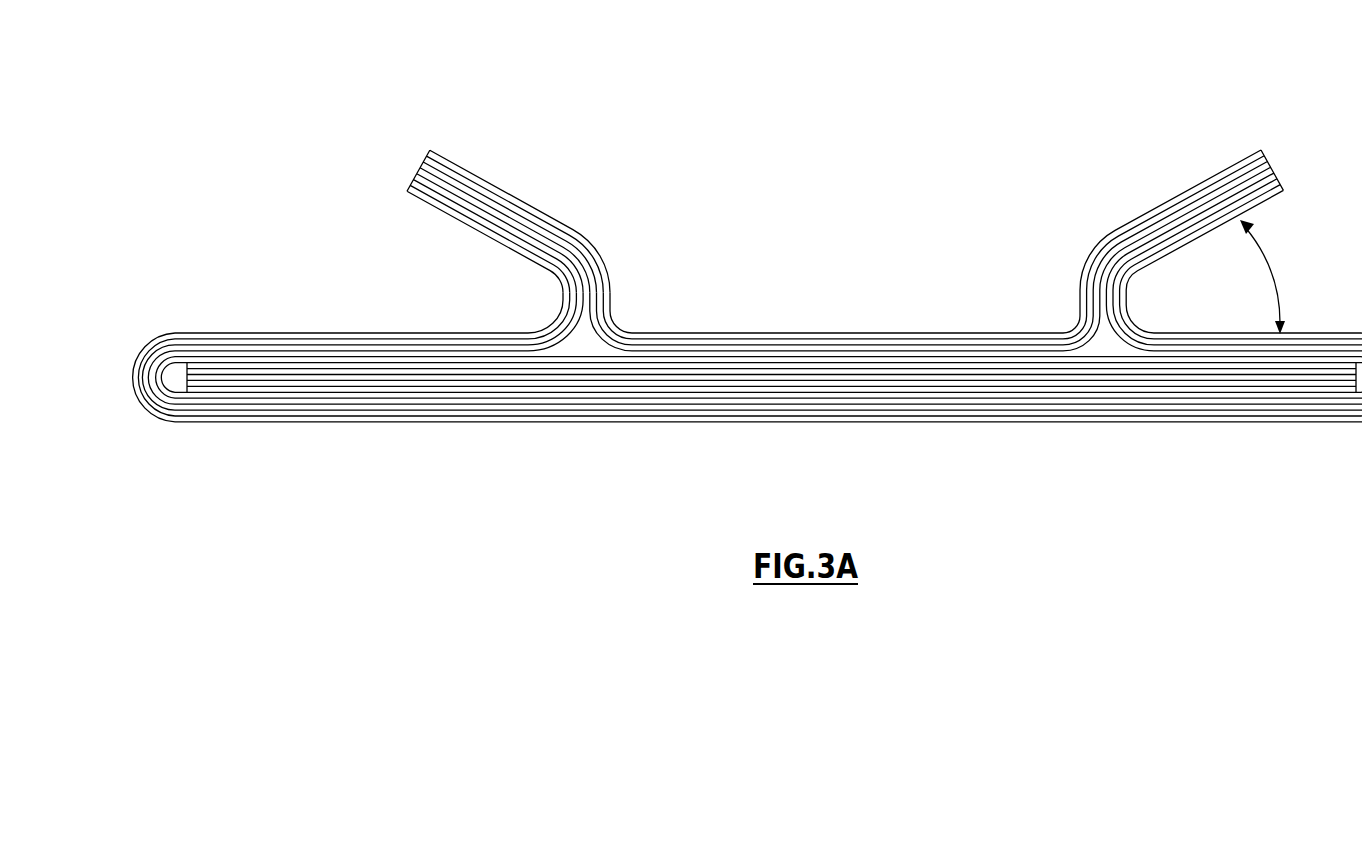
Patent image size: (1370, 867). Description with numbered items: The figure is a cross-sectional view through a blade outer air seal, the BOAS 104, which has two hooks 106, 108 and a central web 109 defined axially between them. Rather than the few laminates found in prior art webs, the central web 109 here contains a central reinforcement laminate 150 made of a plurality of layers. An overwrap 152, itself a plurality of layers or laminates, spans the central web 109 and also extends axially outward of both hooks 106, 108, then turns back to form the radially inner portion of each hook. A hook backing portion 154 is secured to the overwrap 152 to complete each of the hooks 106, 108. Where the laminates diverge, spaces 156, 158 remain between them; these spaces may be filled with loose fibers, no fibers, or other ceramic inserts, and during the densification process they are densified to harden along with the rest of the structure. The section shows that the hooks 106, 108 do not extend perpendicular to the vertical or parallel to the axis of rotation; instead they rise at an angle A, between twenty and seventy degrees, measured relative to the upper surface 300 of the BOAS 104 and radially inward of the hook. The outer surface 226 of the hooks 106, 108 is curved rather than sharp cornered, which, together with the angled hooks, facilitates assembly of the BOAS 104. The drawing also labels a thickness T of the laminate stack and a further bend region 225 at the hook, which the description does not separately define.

The BOAS 104 is at (1064, 94).
The hook 106 is at (495, 215).
The hook 108 is at (1180, 187).
The central web 109 is at (727, 407).
The central reinforcement laminate 150 is at (710, 368).
The overwrap 152 is at (596, 405).
The hook backing portion 154 is at (598, 291).
The space 156 is at (578, 347).
The space 158 is at (163, 370).
The first bend radius 225 is at (588, 246).
The outer surface 226 is at (1084, 247).
The upper surface 300 is at (1193, 325).
The thickness T is at (558, 296).
The angle A is at (1262, 277).